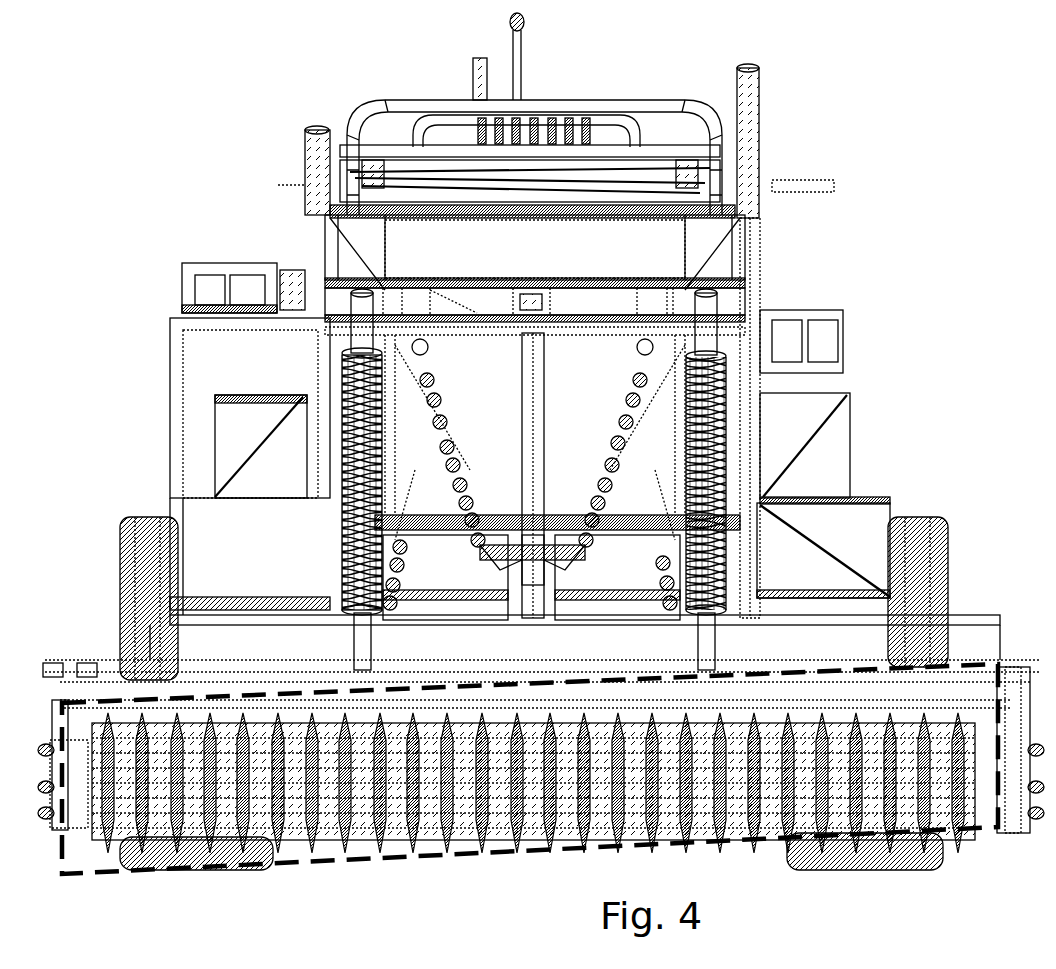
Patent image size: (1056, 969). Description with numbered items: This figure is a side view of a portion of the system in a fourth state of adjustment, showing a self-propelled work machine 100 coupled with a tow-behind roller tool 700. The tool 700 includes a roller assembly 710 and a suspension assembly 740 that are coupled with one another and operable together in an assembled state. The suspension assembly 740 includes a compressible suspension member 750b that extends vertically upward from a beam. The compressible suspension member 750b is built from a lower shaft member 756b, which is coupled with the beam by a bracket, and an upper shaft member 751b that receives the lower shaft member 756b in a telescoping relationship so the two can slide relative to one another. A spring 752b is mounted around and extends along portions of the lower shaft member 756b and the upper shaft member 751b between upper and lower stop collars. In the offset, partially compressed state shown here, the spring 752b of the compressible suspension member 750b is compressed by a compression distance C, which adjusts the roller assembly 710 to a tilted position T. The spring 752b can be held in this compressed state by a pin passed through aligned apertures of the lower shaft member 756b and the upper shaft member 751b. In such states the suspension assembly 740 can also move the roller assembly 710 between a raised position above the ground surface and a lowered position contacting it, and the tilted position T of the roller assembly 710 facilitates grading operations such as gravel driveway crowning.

The self-propelled work machine 100 is at (790, 160).
The tow-behind roller tool 700 is at (492, 304).
The suspension assembly 740 is at (325, 520).
The upper shaft member 751b is at (707, 338).
The spring 752b is at (727, 440).
The lower shaft member 756b is at (697, 520).
The compressible suspension member 750b is at (727, 512).
The compression distance C is at (731, 570).
The tilted position T is at (970, 660).
The roller assembly 710 is at (489, 866).